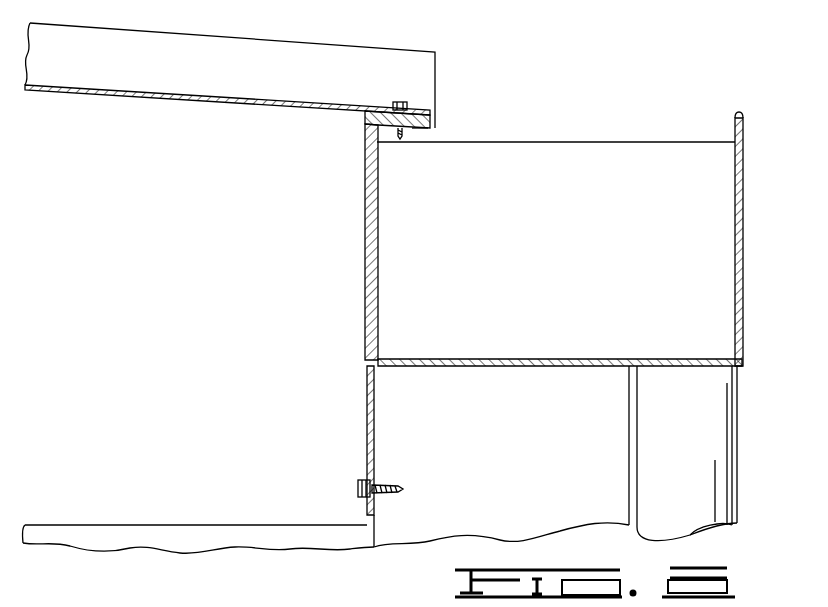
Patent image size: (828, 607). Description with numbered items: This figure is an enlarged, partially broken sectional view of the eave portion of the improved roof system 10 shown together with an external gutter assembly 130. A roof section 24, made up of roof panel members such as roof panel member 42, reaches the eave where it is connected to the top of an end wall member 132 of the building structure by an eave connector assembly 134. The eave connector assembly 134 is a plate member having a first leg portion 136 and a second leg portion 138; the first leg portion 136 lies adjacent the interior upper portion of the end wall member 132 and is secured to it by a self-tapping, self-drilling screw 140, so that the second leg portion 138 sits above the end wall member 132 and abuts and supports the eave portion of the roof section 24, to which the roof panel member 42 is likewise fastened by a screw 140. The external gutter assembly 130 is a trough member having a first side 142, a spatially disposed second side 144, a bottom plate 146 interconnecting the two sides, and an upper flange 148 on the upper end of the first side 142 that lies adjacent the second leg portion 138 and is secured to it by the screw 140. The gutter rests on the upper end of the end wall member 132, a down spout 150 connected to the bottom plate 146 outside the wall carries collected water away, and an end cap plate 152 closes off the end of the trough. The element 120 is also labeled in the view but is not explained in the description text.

The building structure assembly 10 is at (390, 30).
The wall panel 24 is at (229, 32).
The panel sheathing 42 is at (290, 60).
The lower wall panel 120 is at (260, 606).
The roof panel assembly 130 is at (749, 181).
The lower panel section 132 is at (527, 484).
The post assembly 134 is at (361, 328).
The lower post member 136 is at (367, 402).
The flange 138 is at (428, 117).
The screw fastener 140 is at (405, 102).
The upper post member 142 is at (378, 252).
The side wall 144 is at (735, 245).
The shelf member 146 is at (537, 358).
The joint seal 148 is at (420, 131).
The tubular member 150 is at (737, 457).
The top panel 152 is at (573, 157).